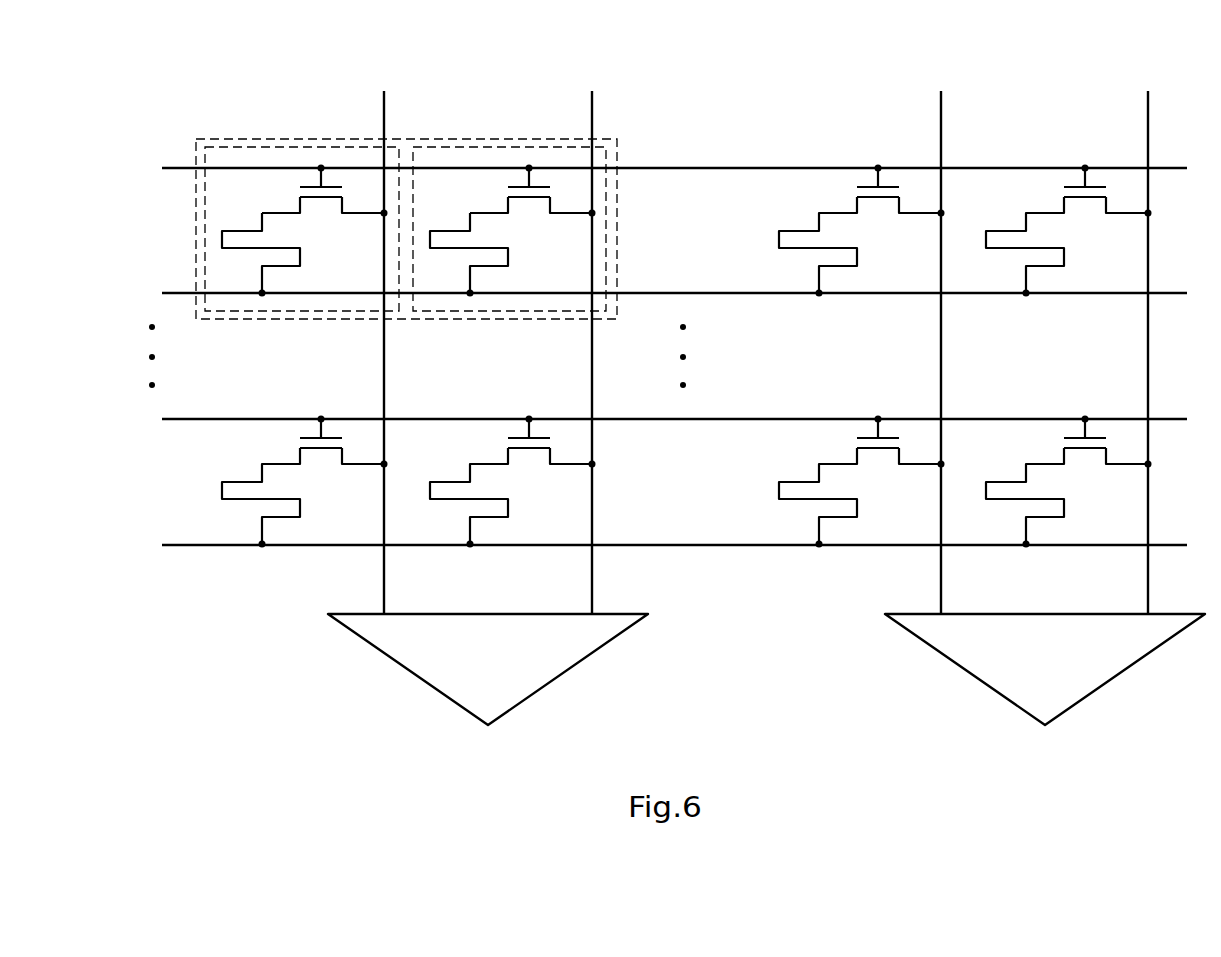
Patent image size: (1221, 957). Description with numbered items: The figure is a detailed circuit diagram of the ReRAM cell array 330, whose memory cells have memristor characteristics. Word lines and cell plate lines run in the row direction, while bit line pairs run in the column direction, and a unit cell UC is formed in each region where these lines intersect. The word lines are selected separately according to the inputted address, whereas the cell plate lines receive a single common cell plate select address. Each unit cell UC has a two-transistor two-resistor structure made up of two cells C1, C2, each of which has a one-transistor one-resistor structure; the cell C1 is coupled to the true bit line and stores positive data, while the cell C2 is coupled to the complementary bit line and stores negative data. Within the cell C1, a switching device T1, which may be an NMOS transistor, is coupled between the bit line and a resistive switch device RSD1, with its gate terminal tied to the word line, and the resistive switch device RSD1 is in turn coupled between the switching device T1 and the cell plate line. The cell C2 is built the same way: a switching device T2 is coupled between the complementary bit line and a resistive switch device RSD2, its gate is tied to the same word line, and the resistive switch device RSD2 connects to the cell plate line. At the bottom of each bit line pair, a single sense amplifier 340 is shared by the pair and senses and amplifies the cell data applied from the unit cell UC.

The cell array 330 is at (653, 311).
The sense amplifier 340 is at (1170, 692).
The unit cell UC is at (391, 198).
The cell C1 is at (302, 194).
The cell C2 is at (509, 194).
The switching device T1 is at (325, 200).
The switching device T2 is at (533, 200).
The resistive switch device RSD1 is at (289, 255).
The resistive switch device RSD2 is at (497, 255).